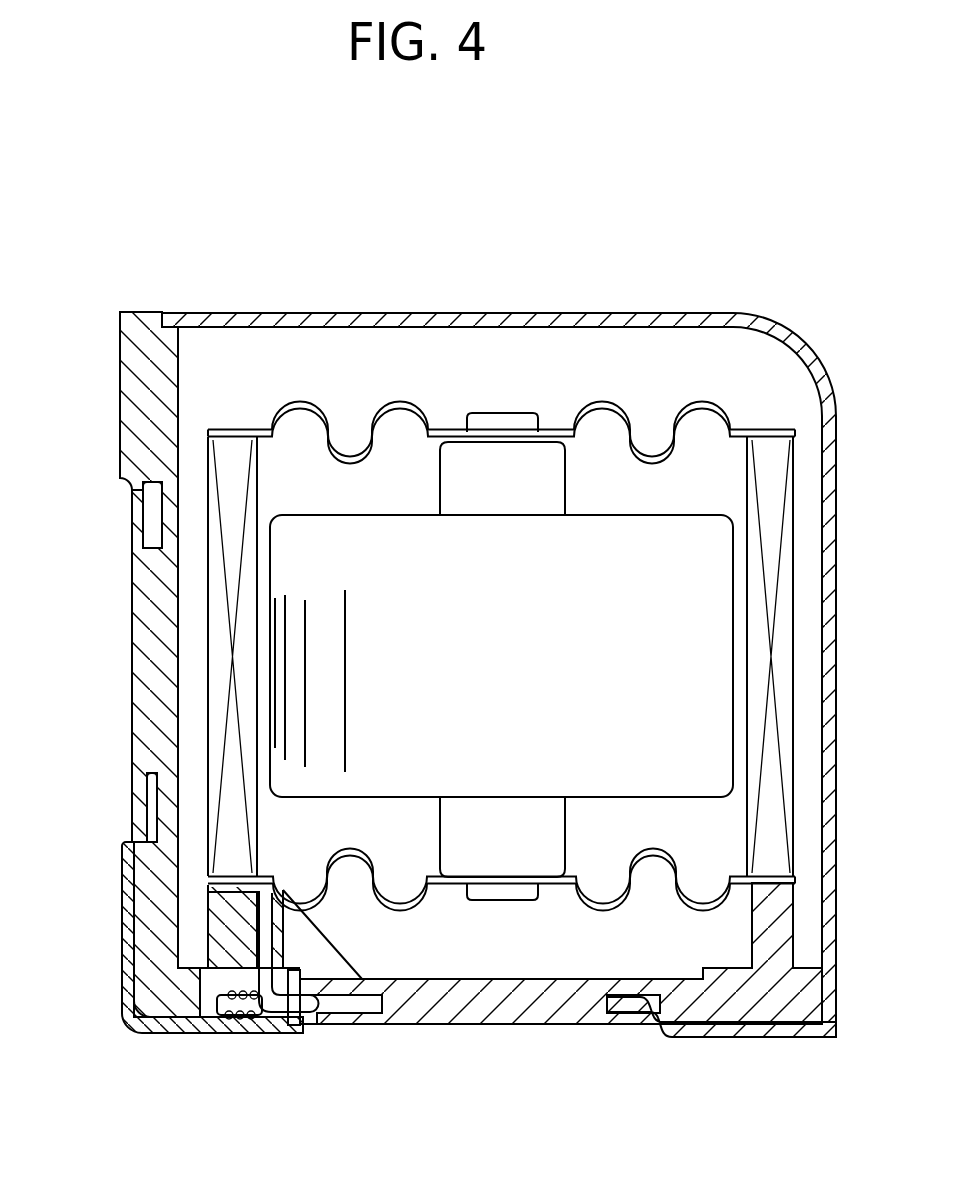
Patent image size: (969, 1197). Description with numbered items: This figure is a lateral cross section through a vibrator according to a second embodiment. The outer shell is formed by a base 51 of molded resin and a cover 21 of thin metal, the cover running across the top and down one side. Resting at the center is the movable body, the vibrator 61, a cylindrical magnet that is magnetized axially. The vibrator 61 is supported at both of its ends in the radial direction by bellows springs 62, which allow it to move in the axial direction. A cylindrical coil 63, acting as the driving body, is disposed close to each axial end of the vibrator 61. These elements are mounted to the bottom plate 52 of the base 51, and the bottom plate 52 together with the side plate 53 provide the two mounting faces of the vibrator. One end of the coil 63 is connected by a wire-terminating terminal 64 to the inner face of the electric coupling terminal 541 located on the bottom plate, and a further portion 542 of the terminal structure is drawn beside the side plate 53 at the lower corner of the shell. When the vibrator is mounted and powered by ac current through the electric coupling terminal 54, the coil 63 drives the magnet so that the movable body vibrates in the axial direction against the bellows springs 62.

The cover 21 is at (702, 317).
The base 51 is at (470, 1008).
The bottom plate 52 is at (570, 1005).
The side plate 53 is at (152, 657).
The electric coupling terminal 54 is at (258, 1034).
The electric coupling terminal 541 is at (212, 1032).
The cover strip 542 is at (137, 912).
The vibrator 61 is at (510, 552).
The bellows springs 62 is at (401, 405).
The cylindrical coil 63 is at (230, 463).
The wire-terminating terminal 64 is at (300, 1027).